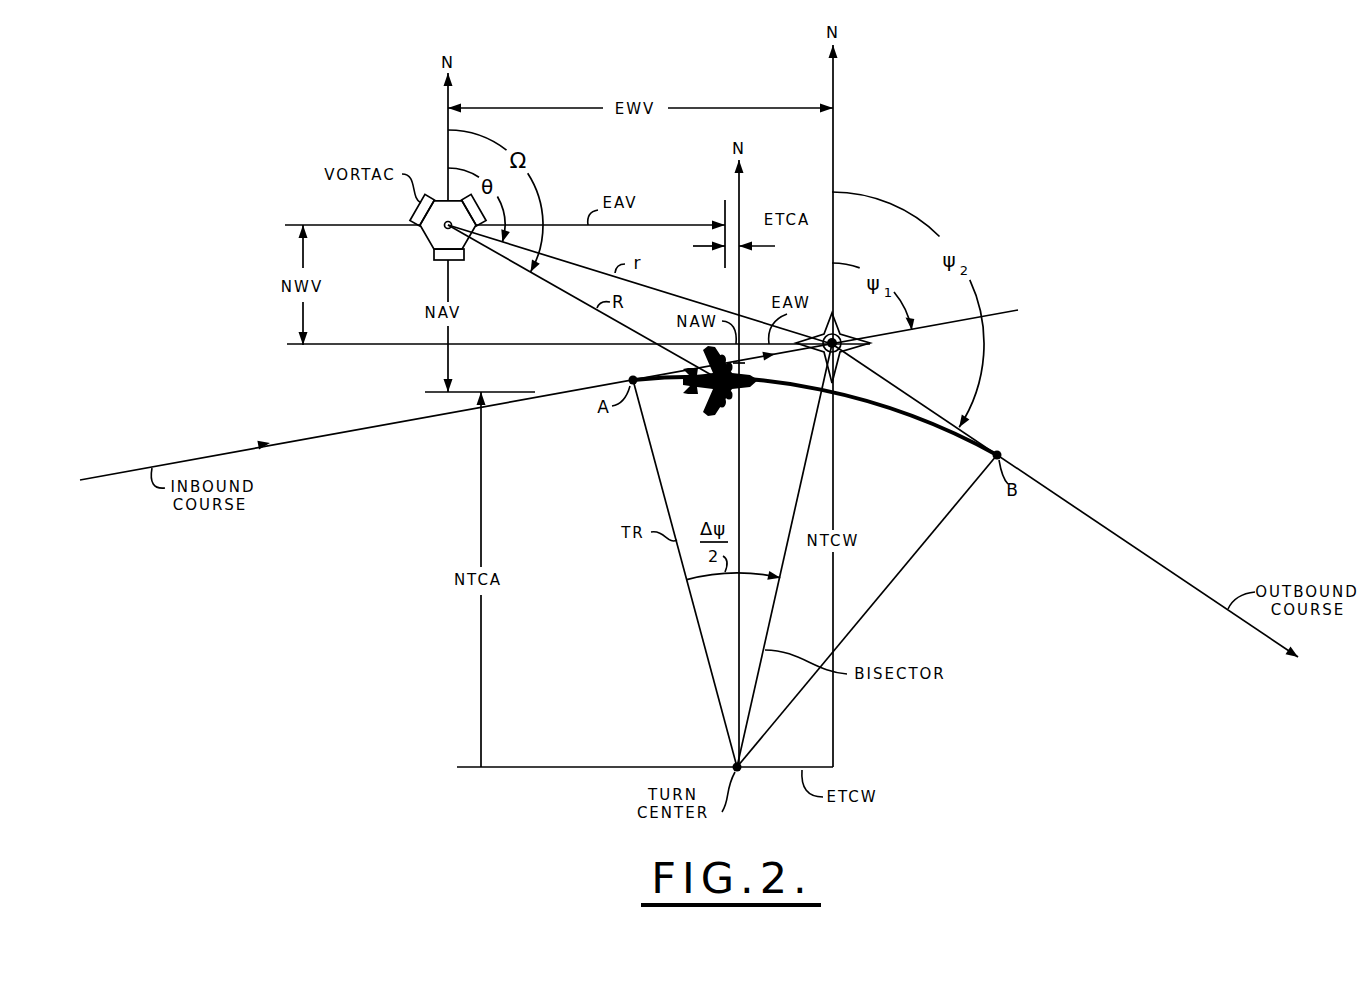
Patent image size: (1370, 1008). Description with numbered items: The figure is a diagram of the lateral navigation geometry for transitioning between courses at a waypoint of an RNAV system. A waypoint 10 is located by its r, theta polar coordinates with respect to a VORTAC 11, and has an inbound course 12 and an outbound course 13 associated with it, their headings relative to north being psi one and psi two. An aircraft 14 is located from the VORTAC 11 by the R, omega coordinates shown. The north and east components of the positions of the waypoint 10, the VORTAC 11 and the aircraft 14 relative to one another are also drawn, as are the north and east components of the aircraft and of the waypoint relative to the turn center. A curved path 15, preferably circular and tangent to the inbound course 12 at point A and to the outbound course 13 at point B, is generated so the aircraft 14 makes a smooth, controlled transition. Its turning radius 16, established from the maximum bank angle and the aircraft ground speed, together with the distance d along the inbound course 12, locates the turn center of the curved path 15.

The waypoint 10 is at (840, 330).
The VORTAC 11 is at (425, 237).
The inbound course 12 is at (316, 436).
The outbound course 13 is at (1106, 523).
The aircraft 14 is at (716, 416).
The curved path 15 is at (878, 408).
The turning radius 16 is at (658, 478).